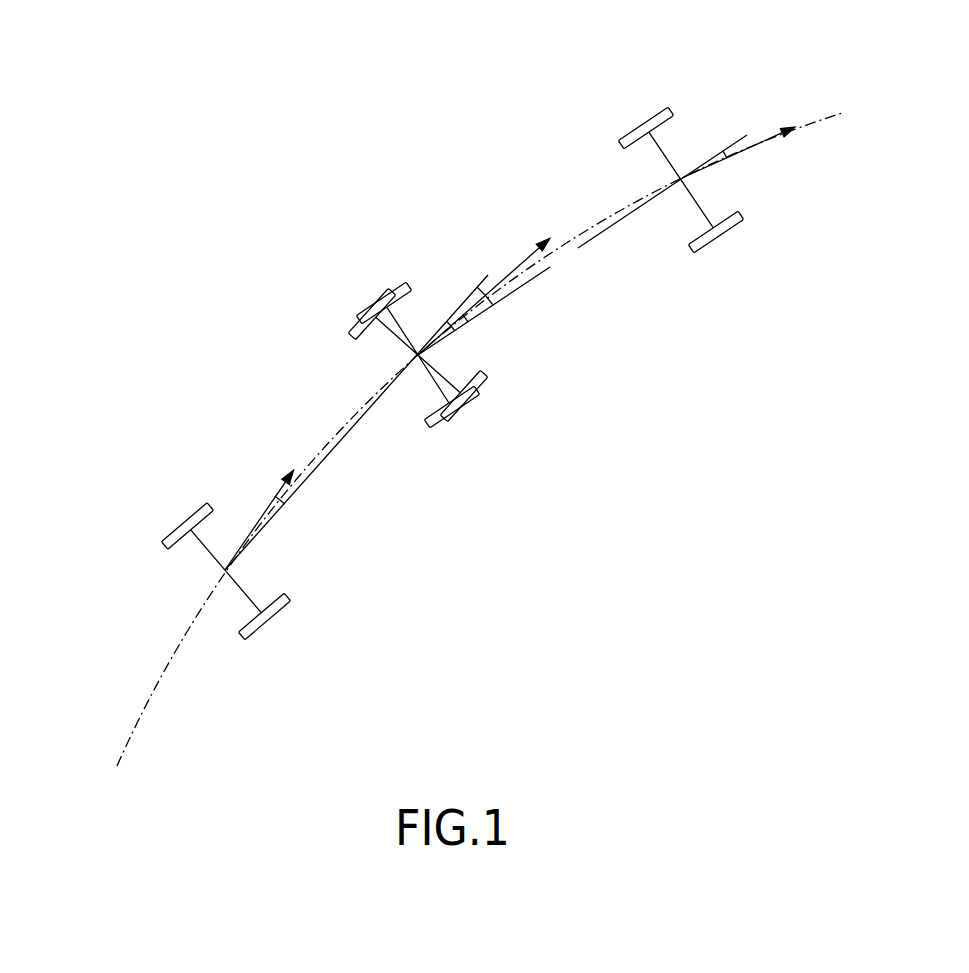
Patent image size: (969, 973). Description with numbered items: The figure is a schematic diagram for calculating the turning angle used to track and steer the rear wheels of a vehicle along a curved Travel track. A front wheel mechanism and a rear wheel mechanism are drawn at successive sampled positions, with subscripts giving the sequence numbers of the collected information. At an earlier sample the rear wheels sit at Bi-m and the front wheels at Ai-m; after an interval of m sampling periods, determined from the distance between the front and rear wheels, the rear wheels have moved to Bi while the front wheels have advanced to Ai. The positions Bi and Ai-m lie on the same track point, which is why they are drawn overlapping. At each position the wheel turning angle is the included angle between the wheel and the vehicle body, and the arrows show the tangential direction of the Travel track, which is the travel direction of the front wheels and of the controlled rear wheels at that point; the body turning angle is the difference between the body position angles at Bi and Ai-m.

The travel track Travel track is at (268, 718).
The rear wheel mechanism position Bi-m is at (180, 525).
The front wheel mechanism position Ai-m is at (353, 337).
The rear wheel mechanism position Bi is at (400, 280).
The front wheel mechanism position Ai is at (620, 137).